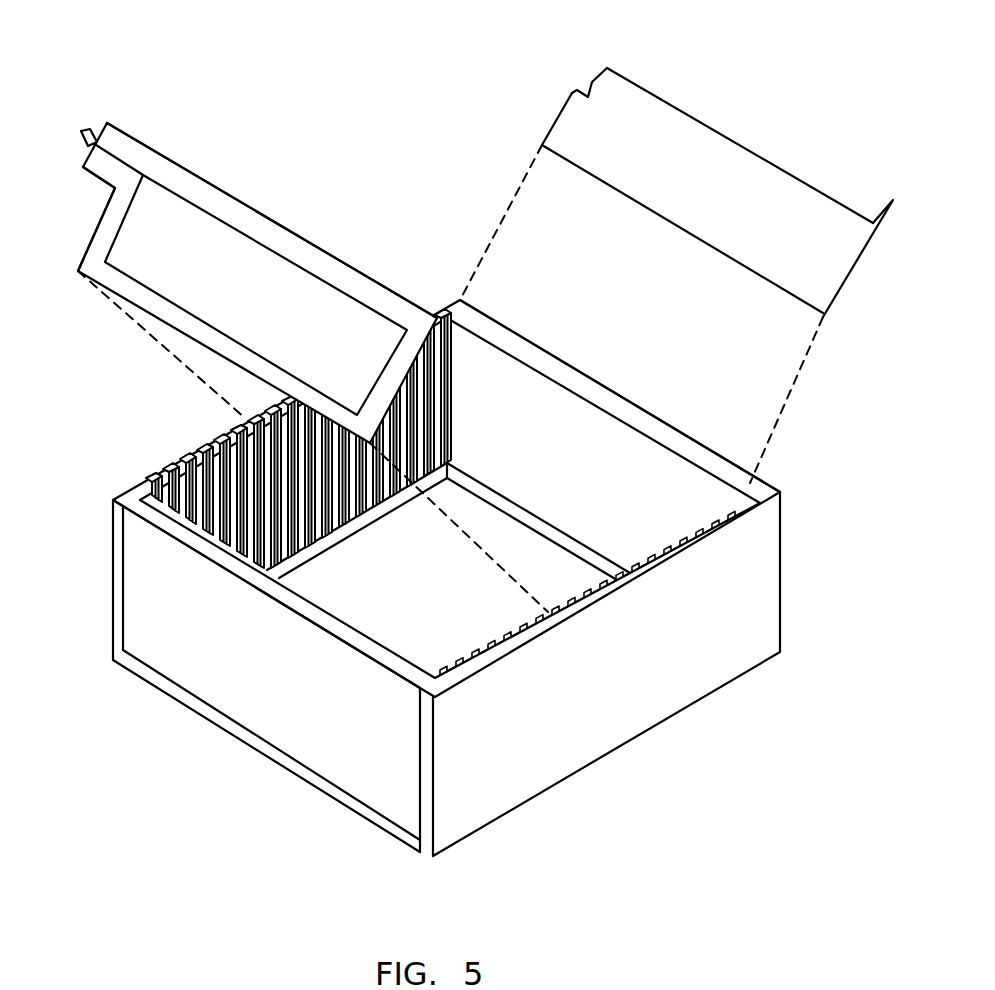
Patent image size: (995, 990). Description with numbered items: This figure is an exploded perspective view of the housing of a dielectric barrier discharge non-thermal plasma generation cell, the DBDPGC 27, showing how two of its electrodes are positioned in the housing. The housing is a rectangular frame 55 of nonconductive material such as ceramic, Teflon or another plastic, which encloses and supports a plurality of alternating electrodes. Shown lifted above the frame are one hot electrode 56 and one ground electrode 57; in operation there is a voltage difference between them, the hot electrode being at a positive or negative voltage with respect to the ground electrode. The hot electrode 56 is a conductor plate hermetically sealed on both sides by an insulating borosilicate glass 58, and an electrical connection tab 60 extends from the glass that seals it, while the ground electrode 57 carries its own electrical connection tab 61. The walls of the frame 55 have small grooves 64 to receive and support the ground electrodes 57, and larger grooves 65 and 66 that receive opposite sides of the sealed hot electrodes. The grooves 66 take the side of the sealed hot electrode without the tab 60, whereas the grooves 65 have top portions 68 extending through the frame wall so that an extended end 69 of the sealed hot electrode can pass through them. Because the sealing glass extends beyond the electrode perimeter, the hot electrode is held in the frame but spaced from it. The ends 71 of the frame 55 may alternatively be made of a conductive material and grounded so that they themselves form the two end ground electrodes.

The dielectric barrier discharge NTP generation cell 27 is at (447, 591).
The rectangular frame 55 is at (130, 512).
The hot electrode 56 is at (285, 313).
The ground electrode 57 is at (676, 246).
The borosilicate glass 58 is at (103, 200).
The electrical connection tab 60 is at (82, 128).
The electrical connection tab 61 is at (875, 198).
The small grooves 64 is at (397, 506).
The larger grooves 65 is at (150, 487).
The larger grooves 66 is at (527, 642).
The top portions 68 is at (165, 460).
The extended end 69 is at (117, 120).
The ends 71 is at (688, 445).